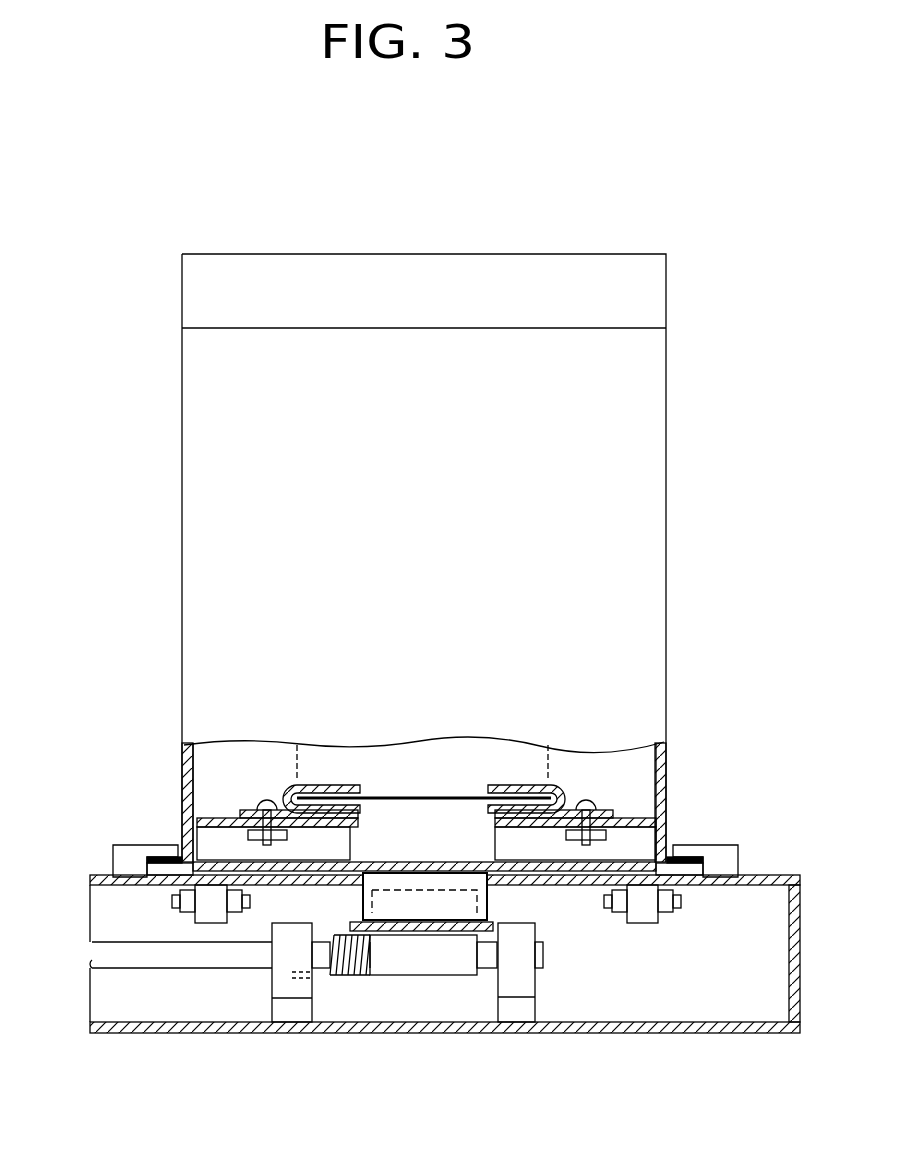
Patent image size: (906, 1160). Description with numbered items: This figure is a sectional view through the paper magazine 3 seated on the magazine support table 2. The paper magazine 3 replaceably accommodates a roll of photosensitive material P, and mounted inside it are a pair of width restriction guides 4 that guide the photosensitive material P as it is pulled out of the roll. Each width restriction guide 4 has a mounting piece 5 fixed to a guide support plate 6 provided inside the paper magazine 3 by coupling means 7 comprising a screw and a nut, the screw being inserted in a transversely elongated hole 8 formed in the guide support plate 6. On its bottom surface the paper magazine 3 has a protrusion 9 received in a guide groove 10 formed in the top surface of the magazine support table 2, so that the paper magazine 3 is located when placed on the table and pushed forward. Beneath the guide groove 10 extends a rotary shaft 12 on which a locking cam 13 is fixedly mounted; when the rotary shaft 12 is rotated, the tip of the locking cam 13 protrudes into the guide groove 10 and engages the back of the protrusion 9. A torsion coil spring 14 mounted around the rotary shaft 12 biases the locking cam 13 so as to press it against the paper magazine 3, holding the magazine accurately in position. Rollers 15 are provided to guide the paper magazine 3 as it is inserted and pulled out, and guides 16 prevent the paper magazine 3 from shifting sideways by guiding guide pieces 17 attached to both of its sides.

The magazine support table 2 is at (90, 877).
The paper magazine 3 is at (193, 293).
The width restriction guides 4 is at (517, 790).
The mounting pieces 5 is at (604, 810).
The guide support plates 6 is at (655, 835).
The coupling means 7 is at (578, 803).
The transversely elongated hole 8 is at (625, 808).
The protrusion 9 is at (470, 880).
The guide groove 10 is at (348, 880).
The rotary shaft 12 is at (177, 958).
The locking cam 13 is at (448, 905).
The torsion coil spring 14 is at (352, 955).
The rollers 15 is at (640, 917).
The guides 16 is at (122, 843).
The guide pieces 17 is at (156, 855).
The photosensitive material P is at (428, 797).